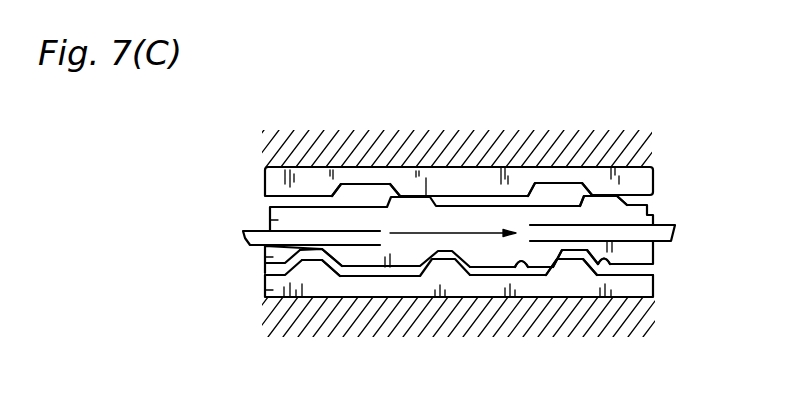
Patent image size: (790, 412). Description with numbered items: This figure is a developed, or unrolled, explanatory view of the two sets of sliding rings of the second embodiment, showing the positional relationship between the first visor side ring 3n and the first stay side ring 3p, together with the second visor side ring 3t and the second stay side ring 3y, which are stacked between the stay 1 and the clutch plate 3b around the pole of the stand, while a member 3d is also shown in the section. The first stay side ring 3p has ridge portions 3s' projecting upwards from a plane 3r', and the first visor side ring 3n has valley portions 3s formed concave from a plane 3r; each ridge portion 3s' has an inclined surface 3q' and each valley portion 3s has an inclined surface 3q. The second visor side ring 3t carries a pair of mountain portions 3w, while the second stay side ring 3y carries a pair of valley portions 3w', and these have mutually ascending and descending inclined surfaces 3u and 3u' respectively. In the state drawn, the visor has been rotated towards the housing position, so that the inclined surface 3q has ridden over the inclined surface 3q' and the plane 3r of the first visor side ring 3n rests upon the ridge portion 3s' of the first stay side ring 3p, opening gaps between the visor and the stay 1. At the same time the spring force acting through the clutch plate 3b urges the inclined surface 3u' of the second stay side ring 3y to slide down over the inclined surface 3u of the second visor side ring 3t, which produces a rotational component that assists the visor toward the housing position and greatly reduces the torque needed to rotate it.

The stay 1 is at (472, 374).
The clutch plate 3b is at (490, 114).
The workpiece / wire feed 3d is at (245, 235).
The second stay side ring 3y is at (268, 187).
The second visor side ring 3t is at (270, 218).
The first visor side ring 3n is at (265, 275).
The first stay side ring 3p is at (263, 300).
The valley portion 3s is at (305, 178).
The ridge portion 3s' is at (315, 321).
The valley portion 3w' is at (357, 143).
The inclined surface 3u' is at (401, 143).
The inclined surface 3u is at (530, 148).
The mountain portion 3w is at (569, 143).
The plane 3r' is at (499, 322).
The plane 3r is at (532, 331).
The inclined surface 3q' is at (572, 312).
The inclined surface 3q is at (627, 315).